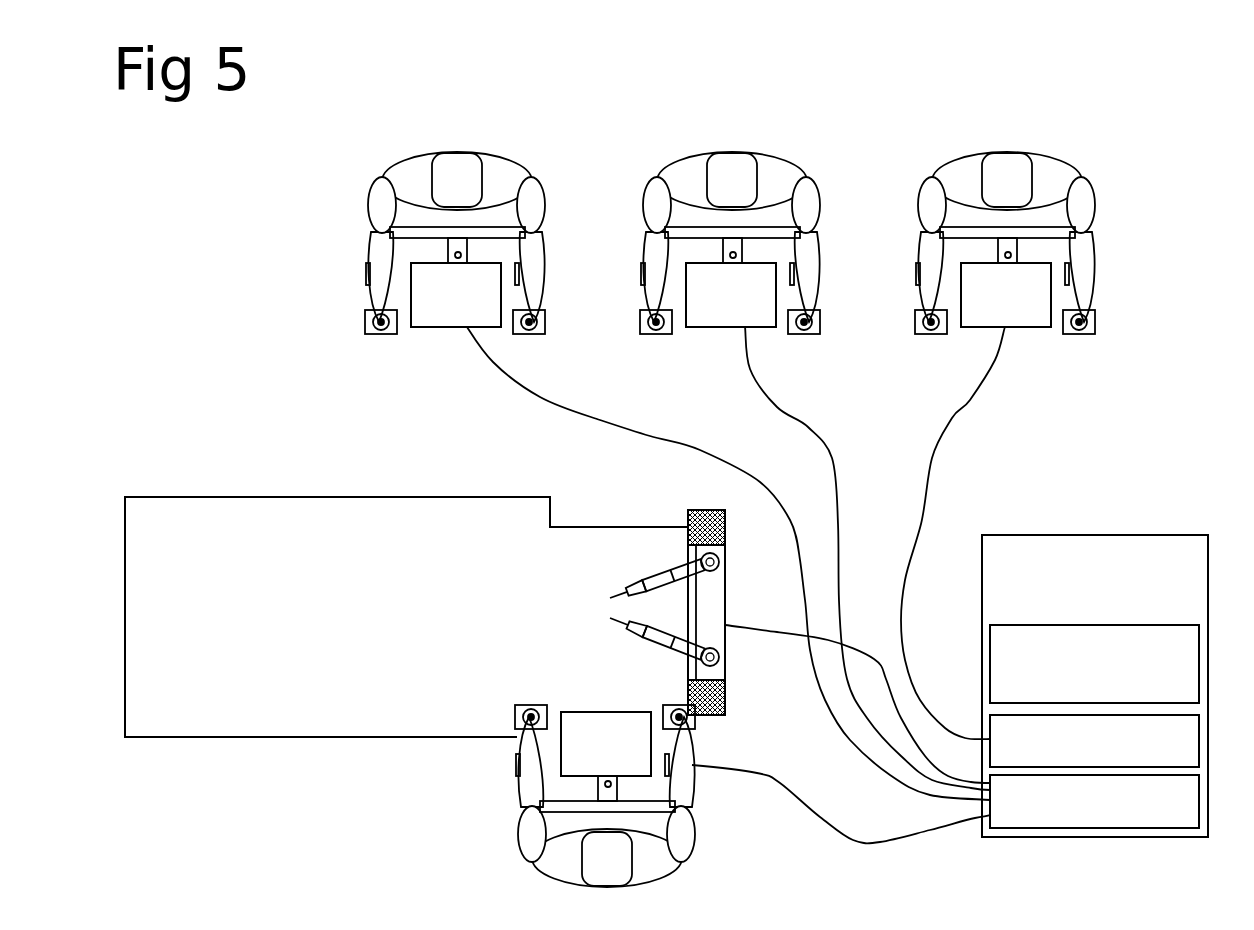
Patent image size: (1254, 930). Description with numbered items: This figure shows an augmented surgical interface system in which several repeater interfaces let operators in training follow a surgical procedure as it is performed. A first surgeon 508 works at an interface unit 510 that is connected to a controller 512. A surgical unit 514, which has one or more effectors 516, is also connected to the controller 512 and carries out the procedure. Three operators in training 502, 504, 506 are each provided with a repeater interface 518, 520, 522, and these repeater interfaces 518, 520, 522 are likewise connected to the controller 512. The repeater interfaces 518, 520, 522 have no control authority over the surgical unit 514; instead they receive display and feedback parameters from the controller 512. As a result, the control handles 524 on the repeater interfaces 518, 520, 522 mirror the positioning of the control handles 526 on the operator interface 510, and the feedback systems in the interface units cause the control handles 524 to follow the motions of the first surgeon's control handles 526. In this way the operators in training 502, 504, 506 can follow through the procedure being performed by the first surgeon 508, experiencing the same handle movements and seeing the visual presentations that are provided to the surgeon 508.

The operator in training 502 is at (1025, 152).
The operator in training 504 is at (755, 152).
The operator in training 506 is at (500, 153).
The first surgeon 508 is at (672, 868).
The interface unit 510 is at (666, 803).
The controller 512 is at (1112, 535).
The surgical unit 514 is at (726, 600).
The effector 516 is at (652, 584).
The repeater interface 518 is at (1030, 328).
The repeater interface 520 is at (718, 328).
The repeater interface 522 is at (440, 328).
The control handles 524 is at (372, 334).
The control handles 526 is at (522, 740).